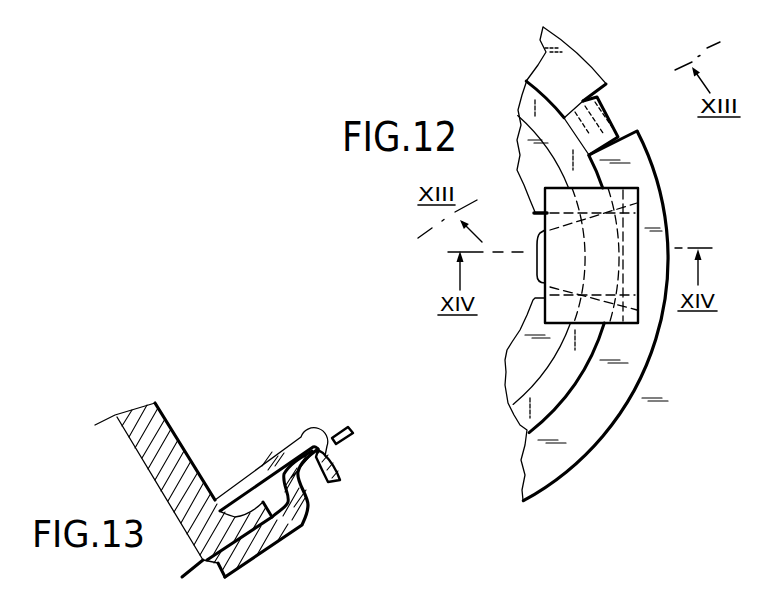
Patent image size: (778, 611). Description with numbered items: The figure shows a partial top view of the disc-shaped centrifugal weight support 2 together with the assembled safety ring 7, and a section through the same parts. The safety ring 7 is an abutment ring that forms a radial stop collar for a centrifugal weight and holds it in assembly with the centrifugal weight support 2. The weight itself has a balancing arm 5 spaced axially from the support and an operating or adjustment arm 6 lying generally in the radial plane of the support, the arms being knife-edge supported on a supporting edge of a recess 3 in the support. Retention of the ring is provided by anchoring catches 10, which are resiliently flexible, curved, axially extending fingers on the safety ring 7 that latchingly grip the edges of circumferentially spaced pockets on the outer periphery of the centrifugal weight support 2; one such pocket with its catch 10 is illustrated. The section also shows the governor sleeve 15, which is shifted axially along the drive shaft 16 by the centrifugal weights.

In FIG. 12, the centrifugal weight support 2 is at (593, 78).
In FIG. 13, the centrifugal weight support 2 is at (288, 537).
In FIG. 12, the recess 3 is at (538, 220).
In FIG. 12, the balancing arm 5 is at (553, 200).
In FIG. 12, the adjustment arm 6 is at (540, 267).
In FIG. 12, the safety ring 7 is at (532, 102).
In FIG. 13, the safety ring 7 is at (282, 448).
In FIG. 12, the anchoring catch 10 is at (607, 120).
In FIG. 13, the anchoring catch 10 is at (330, 462).
In FIG. 13, the governor sleeve 15 is at (173, 445).
In FIG. 13, the drive shaft 16 is at (118, 440).